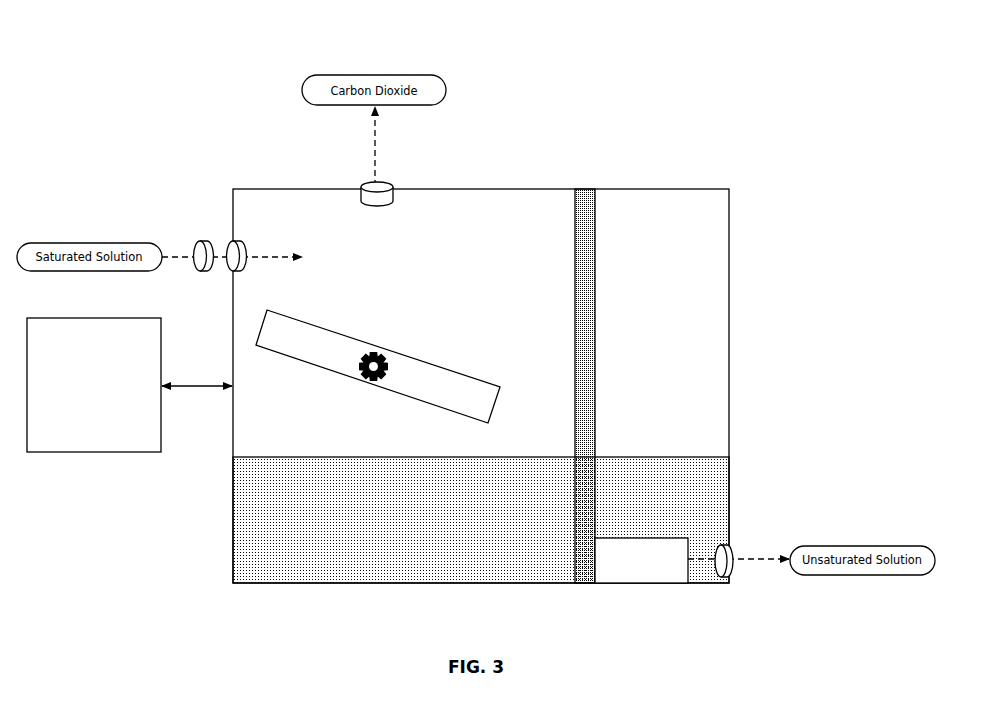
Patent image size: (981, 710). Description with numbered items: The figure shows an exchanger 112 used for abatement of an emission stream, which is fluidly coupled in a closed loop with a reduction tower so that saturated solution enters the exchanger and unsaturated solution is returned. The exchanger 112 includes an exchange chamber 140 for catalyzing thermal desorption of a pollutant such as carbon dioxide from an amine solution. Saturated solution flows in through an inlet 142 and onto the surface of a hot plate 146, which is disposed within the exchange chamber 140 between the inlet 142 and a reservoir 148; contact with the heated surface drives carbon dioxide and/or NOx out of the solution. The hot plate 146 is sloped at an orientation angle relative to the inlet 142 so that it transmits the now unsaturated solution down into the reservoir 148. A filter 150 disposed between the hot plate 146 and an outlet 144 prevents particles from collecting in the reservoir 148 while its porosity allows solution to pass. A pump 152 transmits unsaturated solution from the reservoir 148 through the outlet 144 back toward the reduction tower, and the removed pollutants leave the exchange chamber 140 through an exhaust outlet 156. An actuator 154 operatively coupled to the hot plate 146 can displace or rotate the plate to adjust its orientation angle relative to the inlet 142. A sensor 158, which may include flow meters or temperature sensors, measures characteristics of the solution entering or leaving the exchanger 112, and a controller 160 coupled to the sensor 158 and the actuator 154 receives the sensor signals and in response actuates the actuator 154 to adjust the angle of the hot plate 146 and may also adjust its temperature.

The exchanger 112 is at (131, 60).
The exchange chamber 140 is at (729, 217).
The inlet 142 is at (232, 240).
The outlet 144 is at (732, 547).
The hot plate 146 is at (298, 357).
The reservoir 148 is at (481, 520).
The filter 150 is at (596, 205).
The pump 152 is at (641, 560).
The actuator 154 is at (363, 380).
The exhaust outlet 156 is at (365, 185).
The sensor 158 is at (198, 240).
The controller 160 is at (129, 385).